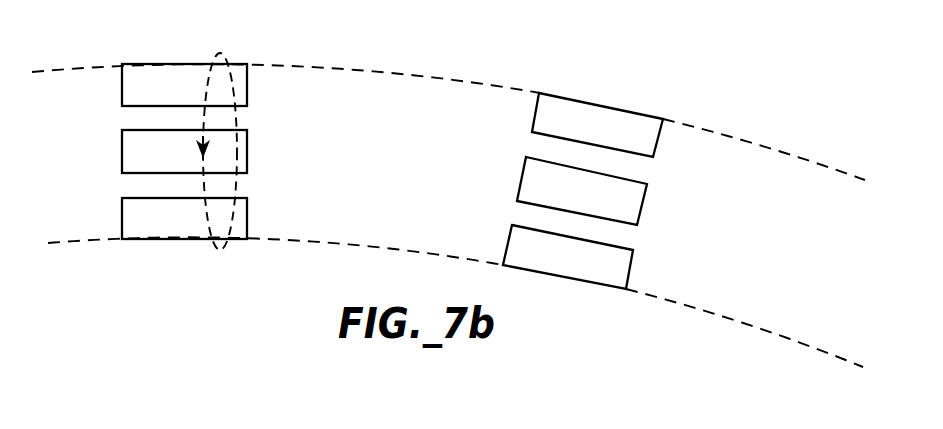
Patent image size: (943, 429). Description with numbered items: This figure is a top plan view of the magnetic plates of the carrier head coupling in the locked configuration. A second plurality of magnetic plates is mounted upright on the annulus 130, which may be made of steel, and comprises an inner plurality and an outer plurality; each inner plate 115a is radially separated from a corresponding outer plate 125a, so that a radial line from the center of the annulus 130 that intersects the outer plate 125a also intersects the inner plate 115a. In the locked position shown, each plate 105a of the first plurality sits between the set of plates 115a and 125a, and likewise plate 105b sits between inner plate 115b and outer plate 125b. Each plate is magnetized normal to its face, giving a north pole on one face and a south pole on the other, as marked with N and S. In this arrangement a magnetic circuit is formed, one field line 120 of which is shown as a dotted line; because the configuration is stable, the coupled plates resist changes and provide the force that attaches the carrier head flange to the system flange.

The outer magnetic plate 125a is at (143, 73).
The magnetic plate of the first plurality 105a is at (242, 155).
The inner magnetic plate 115a is at (157, 233).
The field line 120 is at (233, 121).
The annulus 130 is at (83, 167).
The outer magnetic plate 125b is at (598, 115).
The magnetic plate of the first plurality 105b is at (635, 205).
The inner magnetic plate 115b is at (603, 275).